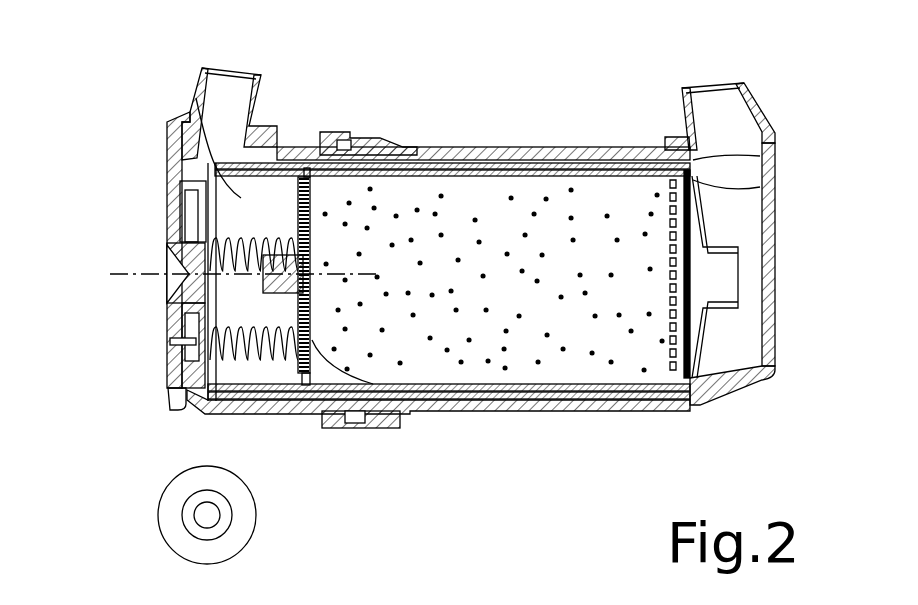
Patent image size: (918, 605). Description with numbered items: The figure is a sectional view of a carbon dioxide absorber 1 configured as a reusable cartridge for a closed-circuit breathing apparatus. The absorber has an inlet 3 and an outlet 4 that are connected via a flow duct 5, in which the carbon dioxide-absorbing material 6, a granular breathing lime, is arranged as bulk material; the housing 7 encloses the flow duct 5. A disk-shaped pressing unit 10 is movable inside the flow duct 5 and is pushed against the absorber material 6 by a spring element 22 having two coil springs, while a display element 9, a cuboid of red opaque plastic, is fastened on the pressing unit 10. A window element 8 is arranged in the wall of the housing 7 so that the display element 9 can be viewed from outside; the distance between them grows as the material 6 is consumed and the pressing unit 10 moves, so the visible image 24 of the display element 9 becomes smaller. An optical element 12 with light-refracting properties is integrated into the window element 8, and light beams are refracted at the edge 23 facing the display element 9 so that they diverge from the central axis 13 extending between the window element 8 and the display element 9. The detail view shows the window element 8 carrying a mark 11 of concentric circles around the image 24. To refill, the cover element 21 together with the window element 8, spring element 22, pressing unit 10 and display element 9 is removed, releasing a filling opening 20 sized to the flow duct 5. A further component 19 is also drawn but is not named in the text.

The carbon dioxide absorber 1 is at (802, 133).
The inlet 3 is at (233, 70).
The outlet 4 is at (712, 85).
The flow duct 5 is at (195, 102).
The carbon dioxide-absorbing material 6 is at (502, 340).
The housing 7 is at (517, 150).
The window element 8 is at (167, 294).
The display element 9 is at (385, 414).
The pressing unit 10 is at (312, 343).
The mark 11 is at (180, 518).
The optical element 12 is at (165, 242).
The central axis 13 is at (263, 262).
The lid fitting 19 is at (350, 138).
The filling opening 20 is at (331, 222).
The cover element 21 is at (289, 150).
The spring element 22 is at (272, 357).
The edge 23 is at (166, 262).
The image 24 is at (200, 512).